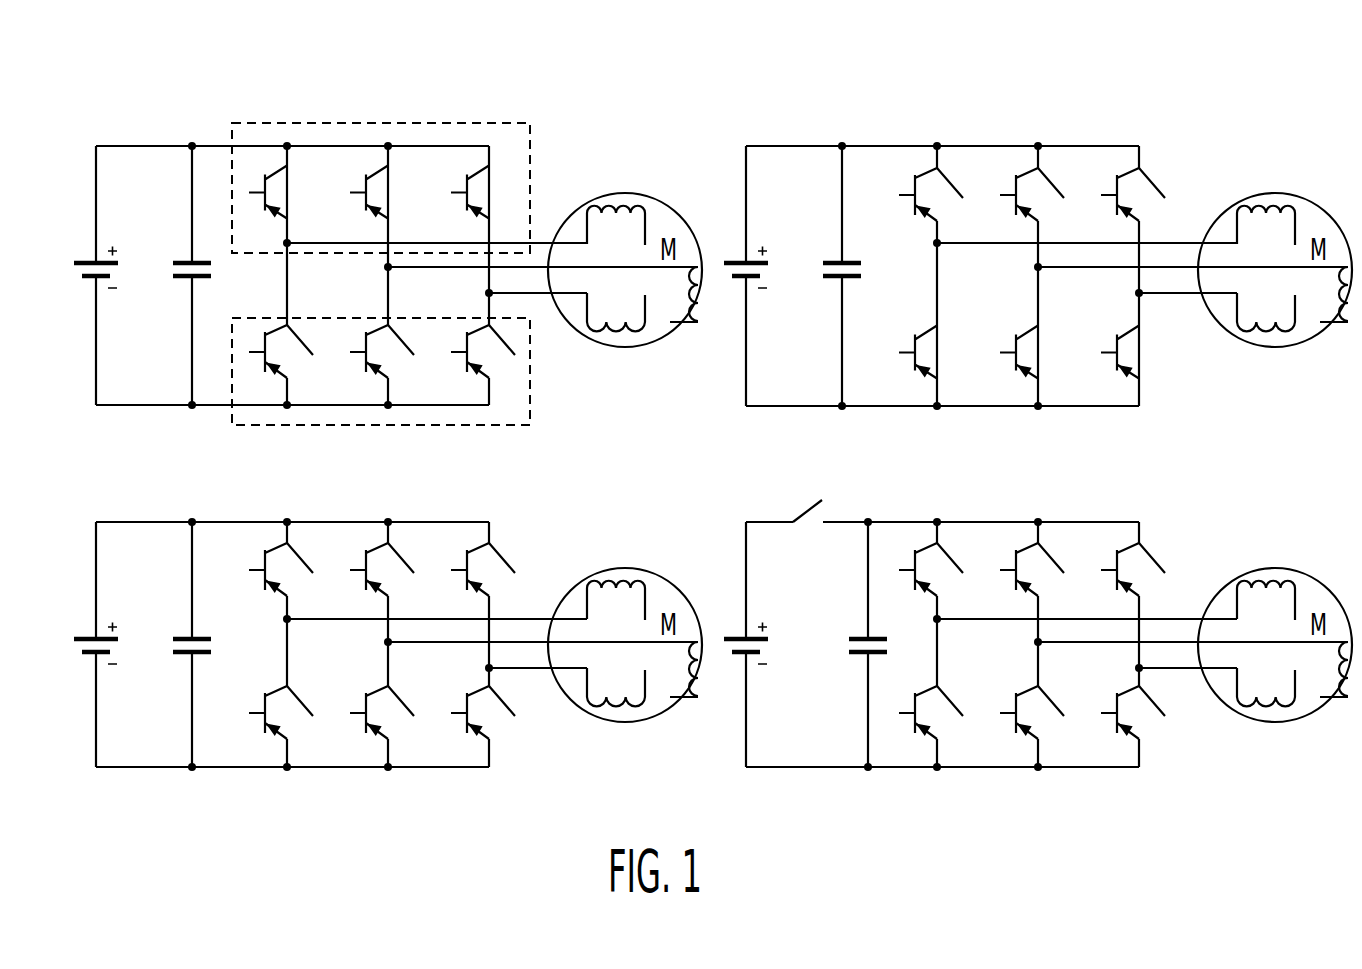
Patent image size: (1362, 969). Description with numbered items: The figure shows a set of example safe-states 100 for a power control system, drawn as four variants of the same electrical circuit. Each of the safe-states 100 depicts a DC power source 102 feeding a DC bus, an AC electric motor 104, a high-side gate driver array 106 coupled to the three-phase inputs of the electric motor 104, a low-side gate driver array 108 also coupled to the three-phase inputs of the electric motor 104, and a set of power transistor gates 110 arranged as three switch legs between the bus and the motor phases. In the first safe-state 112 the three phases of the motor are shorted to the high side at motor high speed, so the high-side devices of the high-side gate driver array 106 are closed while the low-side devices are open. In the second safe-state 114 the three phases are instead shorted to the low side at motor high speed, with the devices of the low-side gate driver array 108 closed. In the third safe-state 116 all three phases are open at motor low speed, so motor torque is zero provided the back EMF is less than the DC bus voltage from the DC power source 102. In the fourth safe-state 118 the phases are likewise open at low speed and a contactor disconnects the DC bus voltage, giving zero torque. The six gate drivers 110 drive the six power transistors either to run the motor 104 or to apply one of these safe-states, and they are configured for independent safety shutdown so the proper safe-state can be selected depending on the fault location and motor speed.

The safe-states 100 is at (84, 90).
The DC power source 102 is at (88, 262).
The AC electric motor 104 is at (620, 193).
The high-side gate driver array 106 is at (531, 139).
The low-side gate driver array 108 is at (528, 383).
The power transistor gates 110 is at (345, 176).
The first safe-state 112 is at (135, 447).
The second safe-state 114 is at (792, 448).
The third safe-state 116 is at (132, 807).
The fourth safe-state 118 is at (778, 808).